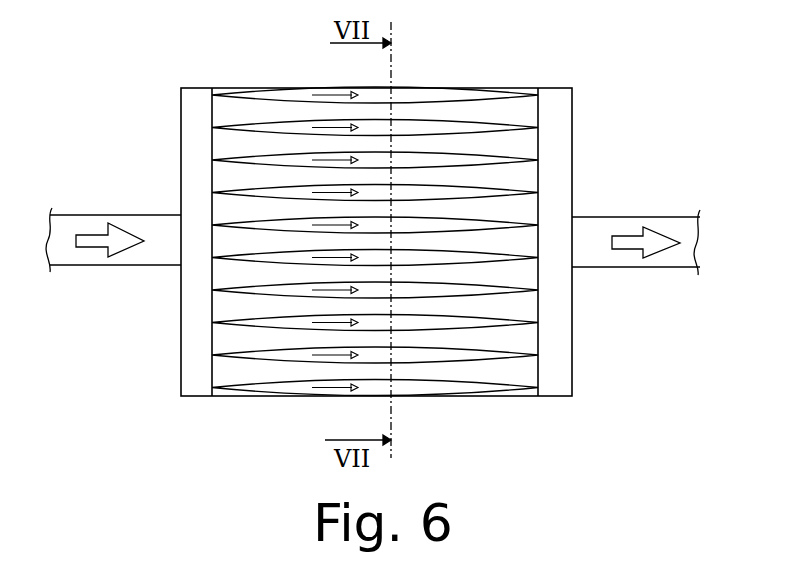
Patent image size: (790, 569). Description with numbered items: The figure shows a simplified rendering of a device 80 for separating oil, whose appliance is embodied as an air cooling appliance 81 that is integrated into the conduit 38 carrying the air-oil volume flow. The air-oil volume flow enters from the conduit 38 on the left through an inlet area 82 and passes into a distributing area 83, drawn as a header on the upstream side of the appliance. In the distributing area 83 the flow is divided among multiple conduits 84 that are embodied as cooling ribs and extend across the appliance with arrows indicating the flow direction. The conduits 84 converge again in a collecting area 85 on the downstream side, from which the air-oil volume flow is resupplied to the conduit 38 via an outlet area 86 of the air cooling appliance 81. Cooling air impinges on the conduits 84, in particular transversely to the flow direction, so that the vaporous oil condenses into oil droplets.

The conduit 38 is at (120, 215).
The device 80 is at (115, 58).
The air cooling appliance 81 is at (229, 85).
The inlet area 82 is at (181, 265).
The distributing area 83 is at (197, 393).
The conduits 84 is at (260, 390).
The collecting area 85 is at (555, 328).
The outlet area 86 is at (572, 268).